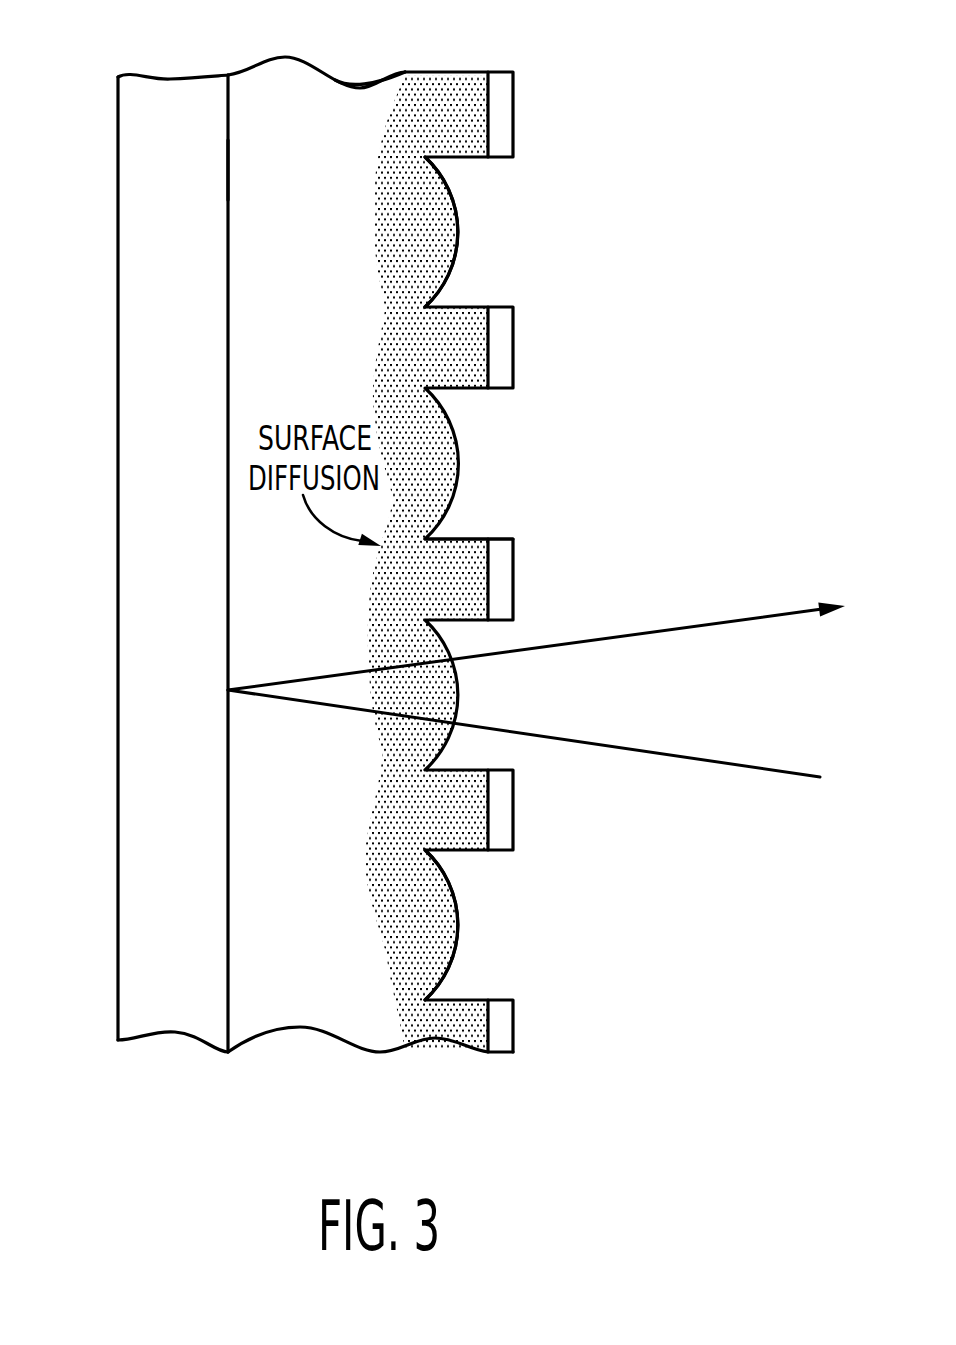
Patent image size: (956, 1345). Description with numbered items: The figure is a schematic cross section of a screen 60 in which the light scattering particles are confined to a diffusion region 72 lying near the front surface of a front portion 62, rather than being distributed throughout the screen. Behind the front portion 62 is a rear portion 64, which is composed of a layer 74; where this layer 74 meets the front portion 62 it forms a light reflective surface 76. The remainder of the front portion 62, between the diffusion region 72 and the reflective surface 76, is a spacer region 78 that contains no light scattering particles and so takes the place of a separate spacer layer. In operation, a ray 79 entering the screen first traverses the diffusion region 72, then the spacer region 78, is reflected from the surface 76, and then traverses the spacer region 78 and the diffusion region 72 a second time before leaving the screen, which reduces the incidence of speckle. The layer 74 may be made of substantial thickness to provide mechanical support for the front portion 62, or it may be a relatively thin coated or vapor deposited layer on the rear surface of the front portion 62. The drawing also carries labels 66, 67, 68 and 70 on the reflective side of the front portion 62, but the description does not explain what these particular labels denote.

The screen 60 is at (51, 593).
The front portion 62 is at (237, 1075).
The rear portion 64 is at (107, 1075).
The lens surface 66 is at (458, 923).
The lens surface 67 is at (470, 243).
The flat land between lenses 68 is at (462, 538).
The reflective strip 70 is at (512, 327).
The diffusion region 72 is at (353, 105).
The layer 74 is at (191, 93).
The light reflective surface 76 is at (228, 167).
The spacer region 78 is at (260, 871).
The ray 79 is at (806, 772).